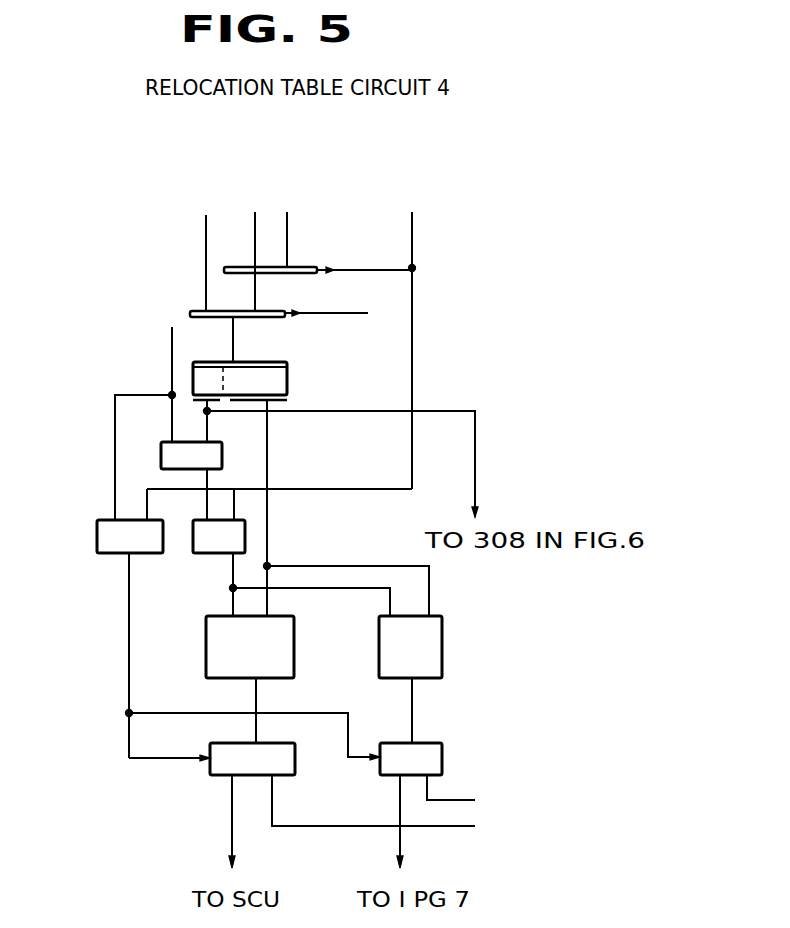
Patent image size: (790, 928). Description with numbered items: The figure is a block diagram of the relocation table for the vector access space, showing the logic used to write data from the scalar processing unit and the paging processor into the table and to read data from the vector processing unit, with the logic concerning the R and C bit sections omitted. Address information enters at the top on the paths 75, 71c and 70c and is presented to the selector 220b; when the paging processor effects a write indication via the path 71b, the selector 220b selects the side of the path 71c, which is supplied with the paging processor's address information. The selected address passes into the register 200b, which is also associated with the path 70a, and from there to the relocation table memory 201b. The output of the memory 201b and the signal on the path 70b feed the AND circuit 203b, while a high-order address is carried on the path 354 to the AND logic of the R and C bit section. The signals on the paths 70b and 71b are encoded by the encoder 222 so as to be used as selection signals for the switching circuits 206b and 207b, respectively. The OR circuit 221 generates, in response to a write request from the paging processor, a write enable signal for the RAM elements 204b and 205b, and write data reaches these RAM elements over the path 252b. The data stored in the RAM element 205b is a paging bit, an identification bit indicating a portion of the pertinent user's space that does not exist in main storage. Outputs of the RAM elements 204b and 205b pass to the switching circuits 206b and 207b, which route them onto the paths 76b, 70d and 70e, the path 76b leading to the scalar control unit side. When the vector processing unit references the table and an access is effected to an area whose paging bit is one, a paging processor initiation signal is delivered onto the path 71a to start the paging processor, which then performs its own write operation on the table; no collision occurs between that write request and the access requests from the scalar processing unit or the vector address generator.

The address path 75 is at (257, 247).
The paging processor address path 71c is at (307, 221).
The scalar address path 70c is at (202, 257).
The selector 220b is at (300, 265).
The paging processor write indication path 71b is at (416, 248).
The address register 200b is at (275, 307).
The scalar processing unit path 70a is at (342, 317).
The scalar request path 70b is at (168, 371).
The relocation table memory 201b is at (287, 378).
The AND circuit 203b is at (222, 456).
The high-order address path 354 is at (479, 465).
The encoder 222 is at (97, 540).
The OR circuit 221 is at (210, 553).
The write data path 252b is at (270, 543).
The RAM element 204b is at (294, 650).
The RAM element 205b is at (442, 645).
The switching circuit 206b is at (220, 775).
The switching circuit 207b is at (442, 757).
The scalar data path 70e is at (457, 797).
The scalar data path 70d is at (443, 830).
The paging processor initiation signal path 71a is at (396, 848).
The output path to scalar processing unit 76b is at (228, 843).